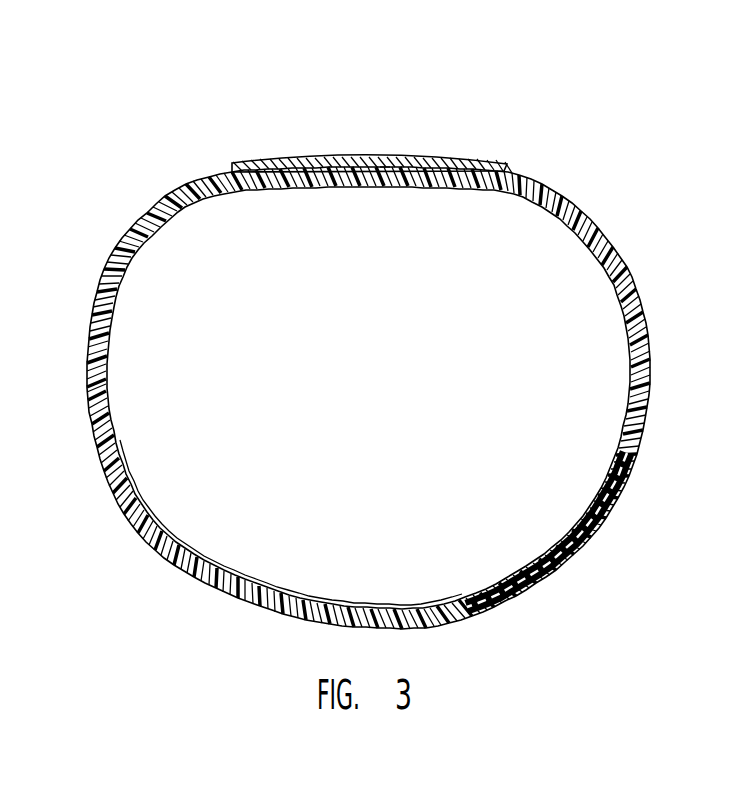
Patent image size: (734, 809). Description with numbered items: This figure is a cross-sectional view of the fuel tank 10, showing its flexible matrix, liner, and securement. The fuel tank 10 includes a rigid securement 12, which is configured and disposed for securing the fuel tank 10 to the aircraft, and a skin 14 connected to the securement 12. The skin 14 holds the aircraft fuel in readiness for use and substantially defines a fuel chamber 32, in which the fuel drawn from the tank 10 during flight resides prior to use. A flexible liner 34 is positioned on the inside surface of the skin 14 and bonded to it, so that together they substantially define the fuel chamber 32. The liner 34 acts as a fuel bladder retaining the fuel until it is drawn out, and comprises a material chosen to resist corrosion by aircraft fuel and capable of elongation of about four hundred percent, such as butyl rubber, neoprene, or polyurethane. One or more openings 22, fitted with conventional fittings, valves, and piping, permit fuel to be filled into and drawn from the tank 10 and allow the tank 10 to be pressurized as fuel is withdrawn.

The fuel tank 10 is at (372, 343).
The rigid securement 12 is at (495, 163).
The skin 14 is at (635, 430).
The openings 22 is at (385, 148).
The fuel chamber 32 is at (430, 520).
The flexible liner 34 is at (607, 477).